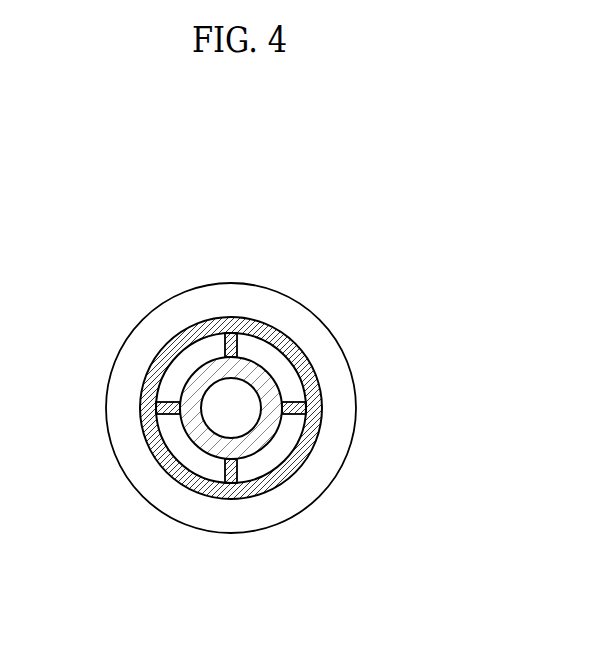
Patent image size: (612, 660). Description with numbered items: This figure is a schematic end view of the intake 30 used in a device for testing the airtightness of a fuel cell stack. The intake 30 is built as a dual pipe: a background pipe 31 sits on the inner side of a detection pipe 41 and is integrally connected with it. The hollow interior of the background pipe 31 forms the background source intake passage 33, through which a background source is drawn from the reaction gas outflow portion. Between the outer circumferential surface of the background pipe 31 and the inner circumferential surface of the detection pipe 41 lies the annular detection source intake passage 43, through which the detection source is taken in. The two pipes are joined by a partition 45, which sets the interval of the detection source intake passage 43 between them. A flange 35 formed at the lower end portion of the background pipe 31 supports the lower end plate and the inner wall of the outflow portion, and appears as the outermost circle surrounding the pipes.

The intake 30 is at (244, 172).
The background pipe 31 is at (288, 360).
The background source intake passage 33 is at (226, 421).
The flange 35 is at (343, 398).
The detection pipe 41 is at (271, 509).
The detection source intake passage 43 is at (280, 457).
The partition 45 is at (228, 348).